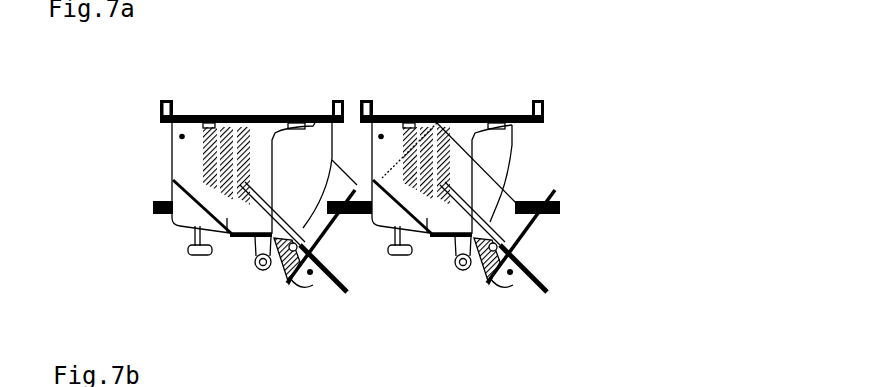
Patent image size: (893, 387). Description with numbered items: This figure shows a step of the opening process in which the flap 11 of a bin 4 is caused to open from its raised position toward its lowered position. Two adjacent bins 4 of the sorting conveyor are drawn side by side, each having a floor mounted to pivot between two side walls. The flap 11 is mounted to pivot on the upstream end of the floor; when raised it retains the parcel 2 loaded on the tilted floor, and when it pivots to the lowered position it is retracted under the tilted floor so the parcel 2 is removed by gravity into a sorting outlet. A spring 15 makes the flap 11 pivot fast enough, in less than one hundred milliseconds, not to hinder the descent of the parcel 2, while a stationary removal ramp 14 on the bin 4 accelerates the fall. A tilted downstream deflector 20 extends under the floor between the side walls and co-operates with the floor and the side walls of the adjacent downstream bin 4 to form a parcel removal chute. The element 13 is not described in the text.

The parcel 2 is at (340, 178).
The bin 4 is at (193, 153).
The tilted downstream deflector 20 is at (437, 122).
The flap 11 is at (318, 232).
The roller 13 is at (250, 262).
The stationary removal ramp 14 is at (333, 287).
The spring 15 is at (277, 285).